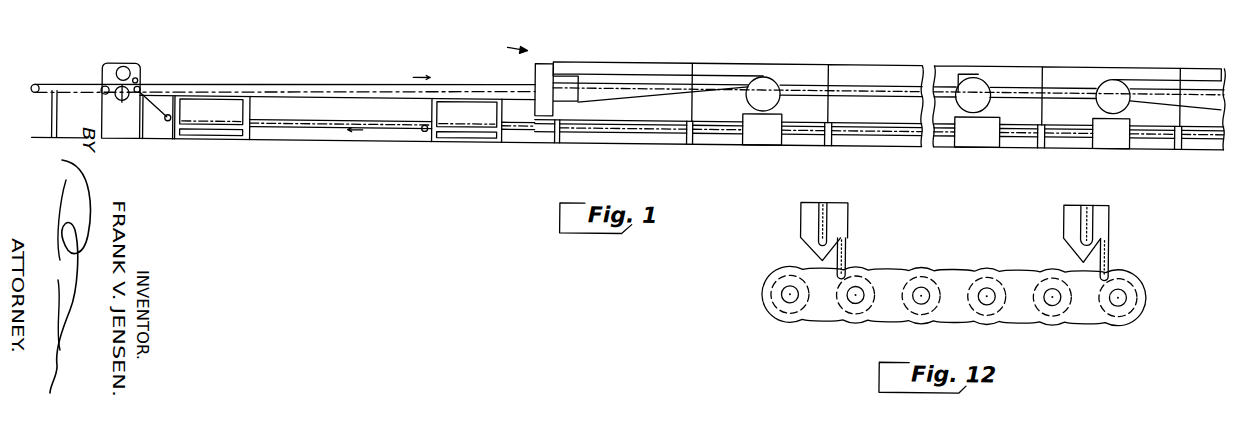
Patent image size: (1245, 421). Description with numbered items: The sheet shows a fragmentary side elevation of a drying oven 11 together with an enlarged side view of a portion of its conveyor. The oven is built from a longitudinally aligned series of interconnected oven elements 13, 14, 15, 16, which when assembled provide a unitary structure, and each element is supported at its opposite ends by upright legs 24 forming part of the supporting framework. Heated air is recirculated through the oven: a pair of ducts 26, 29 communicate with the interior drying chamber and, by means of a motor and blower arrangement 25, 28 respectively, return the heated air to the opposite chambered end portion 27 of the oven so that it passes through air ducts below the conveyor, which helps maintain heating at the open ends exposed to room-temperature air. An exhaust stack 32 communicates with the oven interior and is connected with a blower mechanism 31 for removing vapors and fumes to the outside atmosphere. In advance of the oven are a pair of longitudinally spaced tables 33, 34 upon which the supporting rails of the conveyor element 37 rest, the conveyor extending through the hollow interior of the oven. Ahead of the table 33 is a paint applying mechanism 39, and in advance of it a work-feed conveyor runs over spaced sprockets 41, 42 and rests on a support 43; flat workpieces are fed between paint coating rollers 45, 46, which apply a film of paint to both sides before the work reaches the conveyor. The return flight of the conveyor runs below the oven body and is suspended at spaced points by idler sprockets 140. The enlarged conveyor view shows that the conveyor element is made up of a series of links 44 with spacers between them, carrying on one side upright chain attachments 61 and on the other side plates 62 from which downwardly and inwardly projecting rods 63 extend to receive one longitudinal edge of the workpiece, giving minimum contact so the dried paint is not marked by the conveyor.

In FIG. 1, the drying oven 11 is at (508, 44).
In FIG. 1, the oven element 13 is at (618, 60).
In FIG. 1, the oven element 14 is at (748, 58).
In FIG. 1, the oven element 15 is at (874, 59).
In FIG. 1, the oven element 16 is at (1083, 61).
In FIG. 1, the upright legs 24 is at (564, 130).
In FIG. 1, the motor and blower arrangement 25 is at (761, 127).
In FIG. 1, the duct 26 is at (598, 72).
In FIG. 1, the chambered end portion 27 is at (544, 57).
In FIG. 1, the motor and blower arrangement 28 is at (1113, 124).
In FIG. 1, the duct 29 is at (1163, 75).
In FIG. 1, the blower mechanism 31 is at (974, 125).
In FIG. 1, the exhaust stack 32 is at (973, 66).
In FIG. 1, the table 33 is at (256, 101).
In FIG. 1, the table 34 is at (428, 104).
In FIG. 1, the conveyor element 37 is at (358, 81).
In FIG. 1, the paint applying mechanism 39 is at (122, 54).
In FIG. 1, the sprocket 41 is at (36, 84).
In FIG. 1, the sprocket 42 is at (108, 95).
In FIG. 1, the support 43 is at (56, 139).
In FIG. 12, the links 44 is at (969, 215).
In FIG. 1, the paint coating roller 45 is at (123, 103).
In FIG. 1, the paint coating roller 46 is at (131, 67).
In FIG. 12, the upright chain attachments 61 is at (1071, 206).
In FIG. 12, the plates 62 is at (815, 243).
In FIG. 12, the rods 63 is at (846, 244).
In FIG. 1, the idler sprockets 140 is at (424, 127).